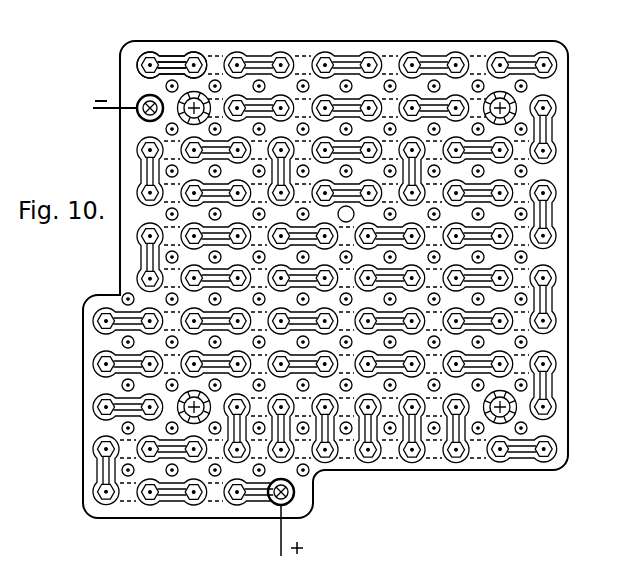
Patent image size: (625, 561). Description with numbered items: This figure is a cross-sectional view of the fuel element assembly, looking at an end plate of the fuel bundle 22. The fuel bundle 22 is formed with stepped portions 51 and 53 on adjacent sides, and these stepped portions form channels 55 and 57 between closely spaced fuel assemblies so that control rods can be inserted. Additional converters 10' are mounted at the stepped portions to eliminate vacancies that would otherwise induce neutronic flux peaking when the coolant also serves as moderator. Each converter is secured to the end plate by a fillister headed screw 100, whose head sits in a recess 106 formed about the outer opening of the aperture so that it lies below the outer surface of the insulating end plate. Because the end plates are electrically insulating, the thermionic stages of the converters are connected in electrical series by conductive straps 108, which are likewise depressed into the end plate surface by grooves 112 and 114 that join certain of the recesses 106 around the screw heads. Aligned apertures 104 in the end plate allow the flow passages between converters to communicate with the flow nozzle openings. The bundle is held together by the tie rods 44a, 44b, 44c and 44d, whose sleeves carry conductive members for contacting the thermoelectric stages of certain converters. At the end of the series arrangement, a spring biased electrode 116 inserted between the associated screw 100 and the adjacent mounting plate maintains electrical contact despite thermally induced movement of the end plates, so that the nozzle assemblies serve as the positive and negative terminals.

The recess 106 is at (142, 55).
The groove 112 is at (172, 55).
The conductive strap 108 is at (182, 55).
The aligned aperture 104 is at (303, 80).
The groove 114 is at (478, 55).
The tie rod 44b is at (180, 98).
The tie rod 44d is at (514, 99).
The tie rod 44a is at (177, 400).
The tie rod 44c is at (514, 399).
The spring biased electrode 116 is at (137, 116).
The channel 55 is at (113, 144).
The fillister headed screw 100 is at (141, 272).
The additional converter 10' is at (170, 440).
The stepped portion 51 is at (90, 474).
The stepped portion 53 is at (177, 507).
The channel 57 is at (455, 489).
The fuel element bundle 22 is at (600, 283).